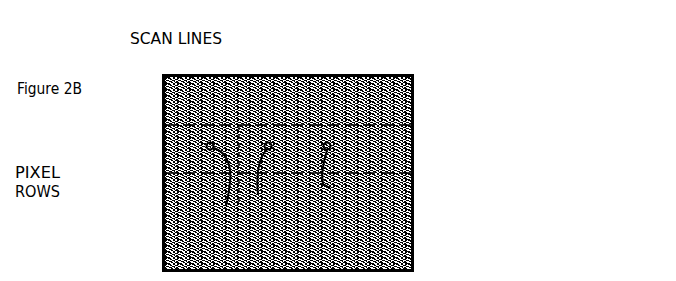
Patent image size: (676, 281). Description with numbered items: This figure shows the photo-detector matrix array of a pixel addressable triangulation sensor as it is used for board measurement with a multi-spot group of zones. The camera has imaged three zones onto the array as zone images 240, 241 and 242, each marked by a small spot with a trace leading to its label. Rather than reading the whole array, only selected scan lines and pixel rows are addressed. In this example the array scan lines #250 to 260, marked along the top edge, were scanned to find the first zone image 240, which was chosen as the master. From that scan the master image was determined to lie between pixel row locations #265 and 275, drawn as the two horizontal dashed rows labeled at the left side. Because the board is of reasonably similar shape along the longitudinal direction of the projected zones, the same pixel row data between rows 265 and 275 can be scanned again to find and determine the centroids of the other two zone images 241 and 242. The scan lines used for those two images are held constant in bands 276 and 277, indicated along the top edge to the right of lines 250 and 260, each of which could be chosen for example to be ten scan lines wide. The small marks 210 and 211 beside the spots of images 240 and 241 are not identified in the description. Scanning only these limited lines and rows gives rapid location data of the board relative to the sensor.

The scan line 250 is at (207, 58).
The scan line 260 is at (246, 64).
The scan line band 276 is at (298, 67).
The scan line band 277 is at (356, 67).
The pixel row location 275 is at (255, 130).
The pixel row location 265 is at (260, 173).
The pixel 210 is at (204, 140).
The pixel 211 is at (263, 140).
The zone image 240 is at (211, 179).
The zone image 241 is at (275, 180).
The zone image 242 is at (342, 177).